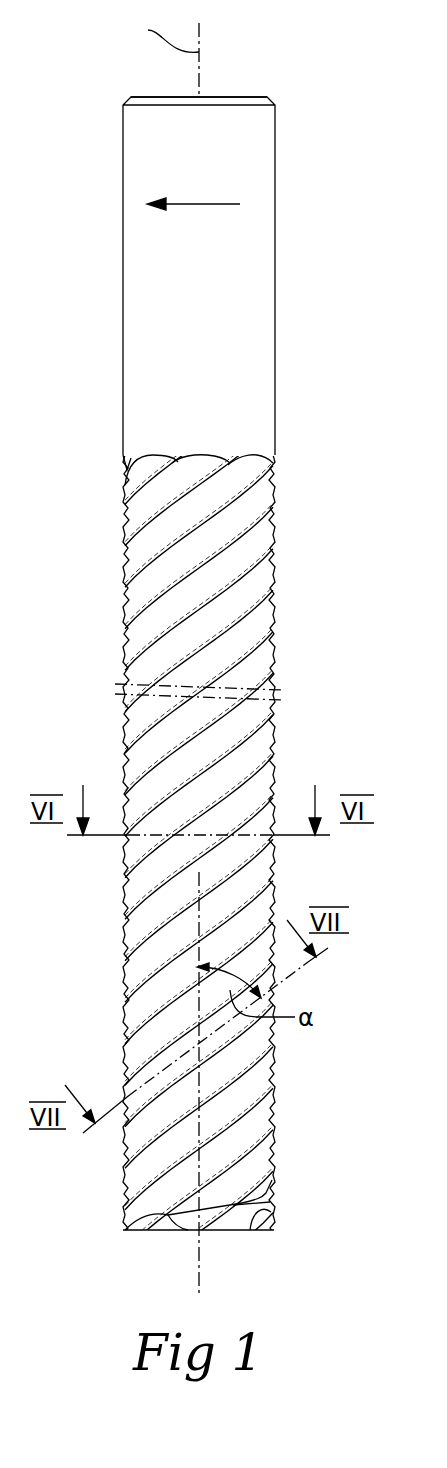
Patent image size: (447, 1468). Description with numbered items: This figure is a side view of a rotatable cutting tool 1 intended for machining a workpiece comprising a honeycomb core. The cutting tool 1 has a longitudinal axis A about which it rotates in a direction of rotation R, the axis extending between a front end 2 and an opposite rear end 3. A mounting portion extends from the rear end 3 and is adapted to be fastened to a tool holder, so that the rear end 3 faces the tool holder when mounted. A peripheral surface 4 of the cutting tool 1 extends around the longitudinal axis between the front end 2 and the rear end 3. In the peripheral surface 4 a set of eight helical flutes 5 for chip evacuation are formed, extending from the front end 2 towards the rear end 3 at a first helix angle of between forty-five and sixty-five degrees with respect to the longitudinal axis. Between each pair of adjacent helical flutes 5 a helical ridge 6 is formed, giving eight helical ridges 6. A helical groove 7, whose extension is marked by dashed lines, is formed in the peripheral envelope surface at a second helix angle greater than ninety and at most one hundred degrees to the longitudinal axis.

The cutting tool 1 is at (310, 246).
The front end 2 is at (237, 1232).
The rear end 3 is at (234, 97).
The peripheral surface 4 is at (209, 365).
The helical flutes 5 is at (258, 577).
The helical ridge 6 is at (233, 620).
The helical groove 7 is at (167, 693).